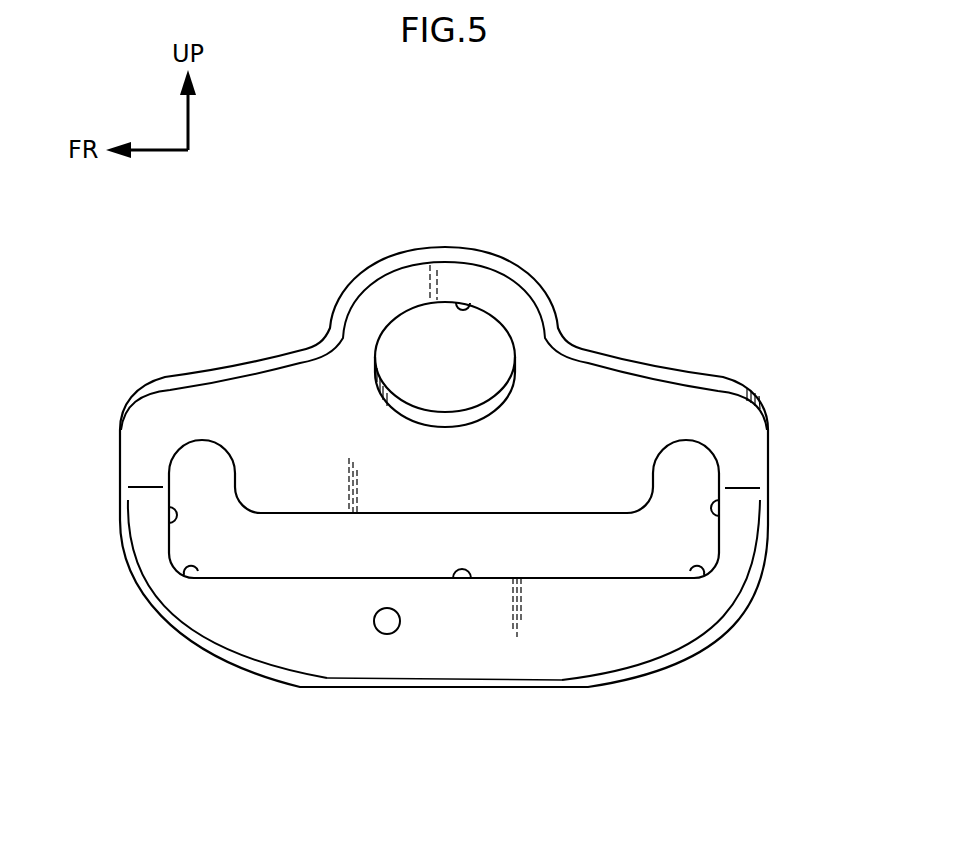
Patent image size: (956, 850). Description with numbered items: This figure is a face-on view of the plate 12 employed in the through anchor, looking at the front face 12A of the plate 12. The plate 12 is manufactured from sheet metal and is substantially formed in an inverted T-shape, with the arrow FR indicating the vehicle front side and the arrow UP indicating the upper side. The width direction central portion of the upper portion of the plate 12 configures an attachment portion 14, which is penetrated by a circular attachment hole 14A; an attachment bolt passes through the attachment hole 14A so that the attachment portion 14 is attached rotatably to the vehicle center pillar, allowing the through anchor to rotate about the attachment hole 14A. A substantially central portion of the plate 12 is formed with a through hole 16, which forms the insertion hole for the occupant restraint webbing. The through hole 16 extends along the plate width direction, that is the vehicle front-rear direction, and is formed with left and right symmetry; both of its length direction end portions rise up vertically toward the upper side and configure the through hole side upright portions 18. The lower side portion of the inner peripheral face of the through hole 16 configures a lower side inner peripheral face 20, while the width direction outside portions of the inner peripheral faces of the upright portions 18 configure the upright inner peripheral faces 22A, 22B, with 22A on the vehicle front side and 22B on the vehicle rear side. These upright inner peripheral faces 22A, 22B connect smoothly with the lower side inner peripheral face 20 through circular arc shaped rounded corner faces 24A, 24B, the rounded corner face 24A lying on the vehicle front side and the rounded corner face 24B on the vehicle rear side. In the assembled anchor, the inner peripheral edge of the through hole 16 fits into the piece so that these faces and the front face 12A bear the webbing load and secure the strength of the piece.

The plate 12 is at (582, 230).
The front face 12A is at (277, 640).
The attachment portion 14 is at (403, 285).
The attachment hole 14A is at (469, 306).
The through hole 16 is at (521, 553).
The through hole side upright portions 18 is at (202, 473).
The lower side inner peripheral face 20 is at (472, 578).
The upright inner peripheral face 22A is at (168, 521).
The upright inner peripheral face 22B is at (720, 515).
The rounded corner face 24A is at (194, 576).
The rounded corner face 24B is at (697, 575).